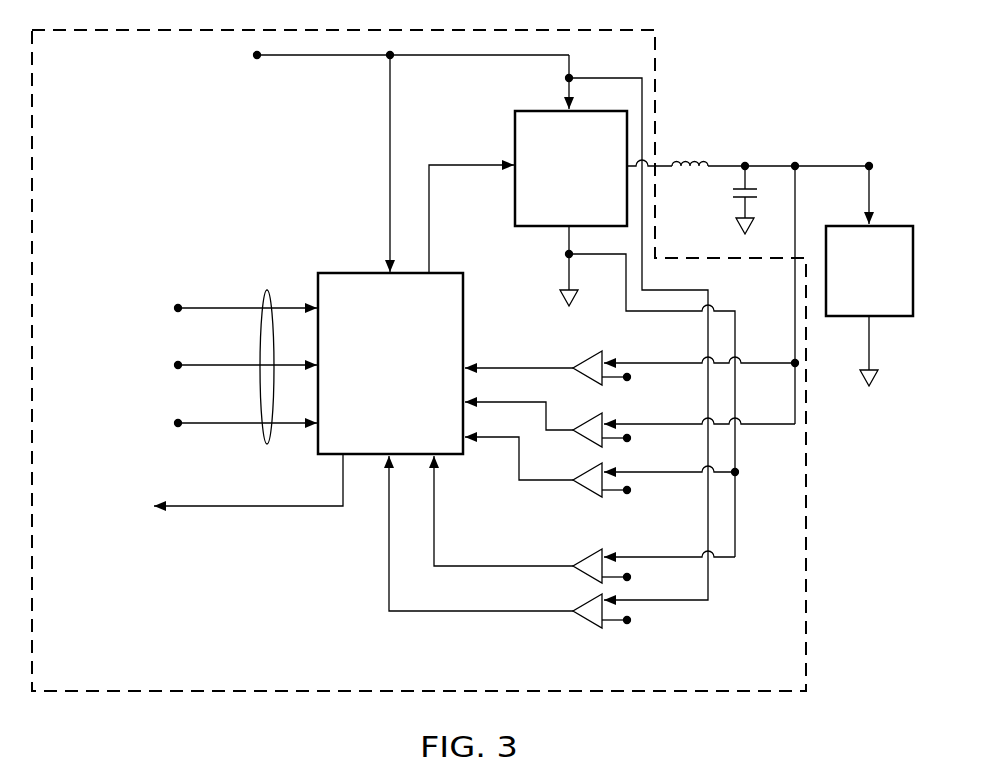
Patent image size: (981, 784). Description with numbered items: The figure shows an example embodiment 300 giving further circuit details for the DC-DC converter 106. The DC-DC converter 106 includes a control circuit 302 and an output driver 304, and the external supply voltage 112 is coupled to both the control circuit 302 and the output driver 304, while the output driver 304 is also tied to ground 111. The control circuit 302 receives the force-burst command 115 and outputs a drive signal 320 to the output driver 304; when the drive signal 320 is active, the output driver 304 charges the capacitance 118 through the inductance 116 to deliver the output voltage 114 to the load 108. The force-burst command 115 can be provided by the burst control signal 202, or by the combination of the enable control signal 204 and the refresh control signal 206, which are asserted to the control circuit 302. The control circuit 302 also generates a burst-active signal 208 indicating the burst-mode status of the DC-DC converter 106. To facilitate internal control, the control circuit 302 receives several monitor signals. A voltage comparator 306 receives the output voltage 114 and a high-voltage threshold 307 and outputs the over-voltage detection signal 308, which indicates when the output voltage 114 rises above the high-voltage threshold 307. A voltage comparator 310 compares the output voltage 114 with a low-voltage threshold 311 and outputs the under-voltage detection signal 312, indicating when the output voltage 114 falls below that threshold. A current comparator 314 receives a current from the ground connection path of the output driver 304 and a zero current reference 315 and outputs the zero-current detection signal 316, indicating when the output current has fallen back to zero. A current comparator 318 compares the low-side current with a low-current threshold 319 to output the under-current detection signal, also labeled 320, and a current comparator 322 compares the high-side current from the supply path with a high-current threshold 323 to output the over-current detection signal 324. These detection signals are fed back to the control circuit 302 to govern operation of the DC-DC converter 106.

The example embodiment 300 is at (766, 46).
The DC-DC converter 106 is at (97, 136).
The external supply voltage 112 is at (293, 56).
The drive signal 320 is at (458, 165).
The output driver 304 is at (552, 211).
The ground 111 is at (569, 283).
The inductance 116 is at (704, 162).
The output voltage 114 is at (855, 165).
The output capacitance 118 is at (737, 197).
The load 108 is at (875, 226).
The control circuit 302 is at (370, 401).
The force-burst command 115 is at (264, 292).
The burst control signal 202 is at (214, 306).
The enable control signal 204 is at (214, 363).
The refresh control signal 206 is at (214, 421).
The burst-active signal 208 is at (214, 505).
The voltage comparator 306 is at (594, 359).
The high-voltage threshold 307 is at (619, 375).
The over-voltage detection signal 308 is at (542, 366).
The voltage comparator 310 is at (594, 418).
The low-voltage threshold 311 is at (619, 437).
The under-voltage detection signal 312 is at (536, 405).
The current comparator 314 is at (582, 489).
The zero current reference 315 is at (620, 491).
The zero-current detection signal 316 is at (492, 440).
The current comparator 318 is at (582, 573).
The low-current threshold 319 is at (621, 568).
The current comparator 322 is at (582, 622).
The high-current threshold 323 is at (614, 627).
The over-current detection signal 324 is at (386, 569).